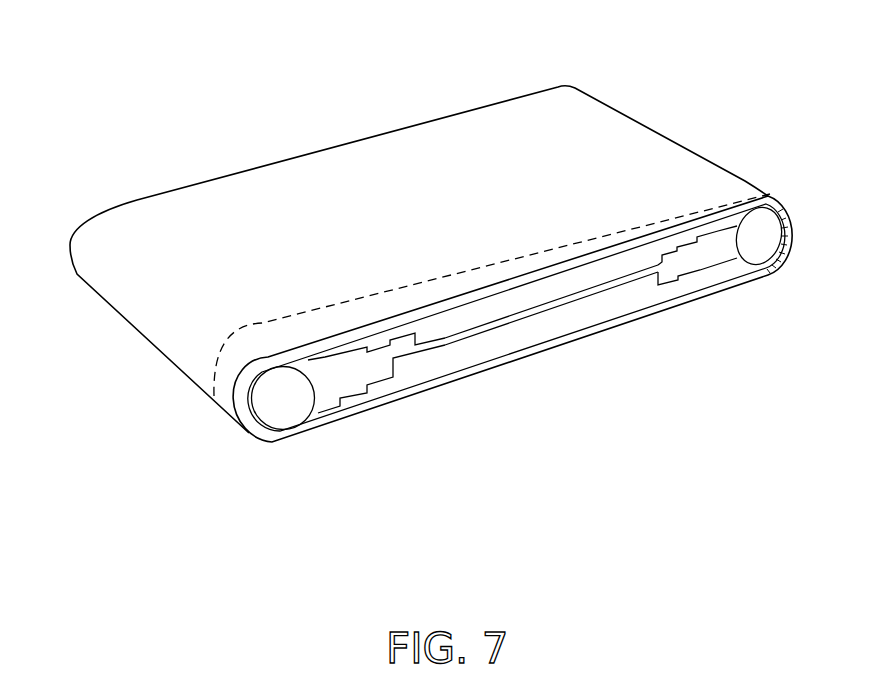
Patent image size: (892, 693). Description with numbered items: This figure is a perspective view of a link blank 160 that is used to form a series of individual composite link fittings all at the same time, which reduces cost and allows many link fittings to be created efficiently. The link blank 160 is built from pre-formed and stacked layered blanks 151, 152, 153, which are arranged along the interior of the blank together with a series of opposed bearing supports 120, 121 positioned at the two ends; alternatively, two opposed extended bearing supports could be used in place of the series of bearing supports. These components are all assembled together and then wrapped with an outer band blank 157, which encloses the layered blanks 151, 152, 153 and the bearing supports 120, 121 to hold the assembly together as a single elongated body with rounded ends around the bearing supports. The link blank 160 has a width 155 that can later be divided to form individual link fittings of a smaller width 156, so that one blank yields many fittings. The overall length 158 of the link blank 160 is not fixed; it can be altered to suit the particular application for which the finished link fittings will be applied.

The opposed bearing support 120 is at (329, 400).
The opposed bearing support 121 is at (737, 267).
The stacked layered blank 151 is at (668, 255).
The stacked layered blank 152 is at (600, 294).
The stacked layered blank 153 is at (517, 340).
The outer band blank 157 is at (430, 390).
The width 155 is at (235, 443).
The smaller width 156 is at (748, 150).
The overall length 158 is at (565, 70).
The link blank 160 is at (735, 160).